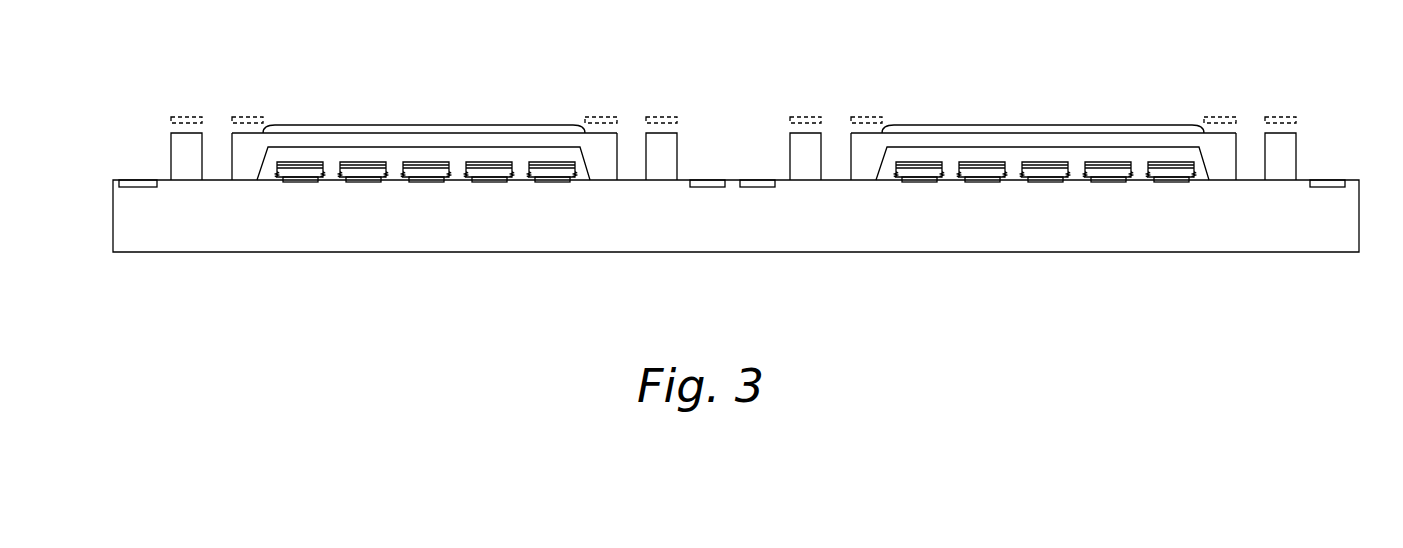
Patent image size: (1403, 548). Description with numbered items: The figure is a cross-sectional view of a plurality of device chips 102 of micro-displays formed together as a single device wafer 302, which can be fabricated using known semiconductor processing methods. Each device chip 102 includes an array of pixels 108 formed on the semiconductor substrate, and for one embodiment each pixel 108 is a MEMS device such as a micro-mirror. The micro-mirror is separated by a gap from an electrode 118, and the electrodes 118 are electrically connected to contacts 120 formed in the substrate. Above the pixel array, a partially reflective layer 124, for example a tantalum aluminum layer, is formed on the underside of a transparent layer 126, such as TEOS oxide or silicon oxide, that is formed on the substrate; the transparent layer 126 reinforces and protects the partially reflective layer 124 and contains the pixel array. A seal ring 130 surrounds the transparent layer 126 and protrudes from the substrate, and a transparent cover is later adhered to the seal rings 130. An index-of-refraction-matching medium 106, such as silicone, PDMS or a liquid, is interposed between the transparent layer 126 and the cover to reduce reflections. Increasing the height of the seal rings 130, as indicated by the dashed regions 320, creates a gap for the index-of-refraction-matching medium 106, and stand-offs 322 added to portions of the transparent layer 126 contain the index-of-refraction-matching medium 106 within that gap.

The device chip 102 is at (734, 191).
The index-of-refraction-matching medium 106 is at (325, 125).
The pixel 108 is at (497, 172).
The electrode 118 is at (362, 183).
The contact 120 is at (142, 180).
The partially reflective layer 124 is at (378, 147).
The transparent layer 126 is at (243, 172).
The seal ring 130 is at (188, 172).
The device wafer 302 is at (1184, 278).
The dashed region 320 is at (1285, 112).
The stand-off 322 is at (1218, 112).